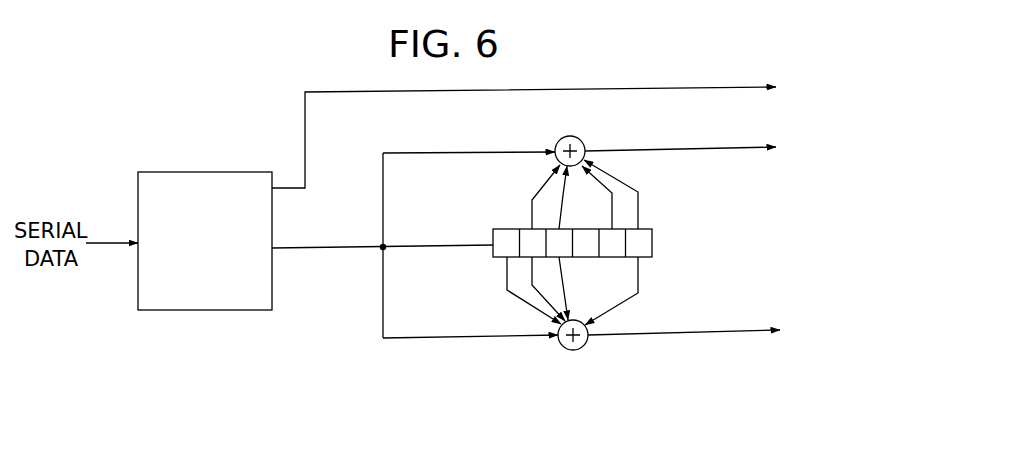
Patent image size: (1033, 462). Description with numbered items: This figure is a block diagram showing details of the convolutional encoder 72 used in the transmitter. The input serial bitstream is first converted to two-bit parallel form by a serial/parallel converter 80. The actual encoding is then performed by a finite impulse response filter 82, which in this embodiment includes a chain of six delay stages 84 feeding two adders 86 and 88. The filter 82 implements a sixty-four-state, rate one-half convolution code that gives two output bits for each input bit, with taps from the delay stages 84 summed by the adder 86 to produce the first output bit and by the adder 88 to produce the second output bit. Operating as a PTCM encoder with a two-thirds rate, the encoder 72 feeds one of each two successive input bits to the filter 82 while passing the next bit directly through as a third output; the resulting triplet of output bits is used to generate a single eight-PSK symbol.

The convolutional encoder 72 is at (130, 140).
The serial/parallel converter 80 is at (237, 172).
The finite impulse response (FIR) filter 82 is at (352, 361).
The delay stages 84 is at (525, 229).
The adder 86 is at (583, 140).
The adder 88 is at (570, 350).